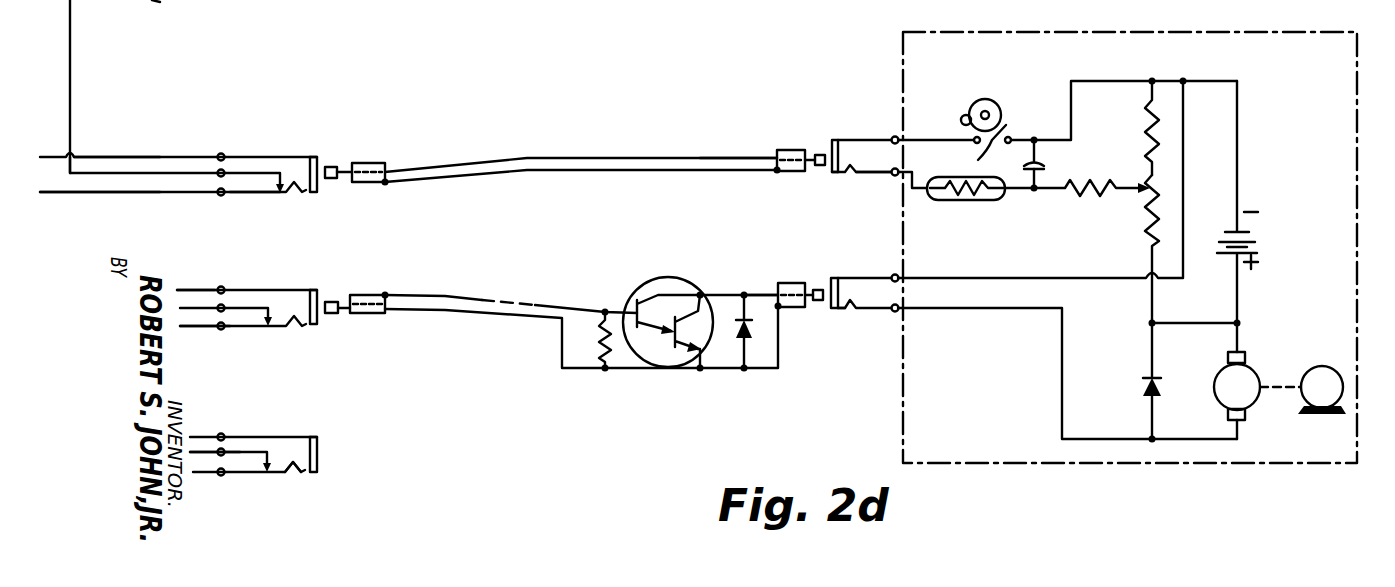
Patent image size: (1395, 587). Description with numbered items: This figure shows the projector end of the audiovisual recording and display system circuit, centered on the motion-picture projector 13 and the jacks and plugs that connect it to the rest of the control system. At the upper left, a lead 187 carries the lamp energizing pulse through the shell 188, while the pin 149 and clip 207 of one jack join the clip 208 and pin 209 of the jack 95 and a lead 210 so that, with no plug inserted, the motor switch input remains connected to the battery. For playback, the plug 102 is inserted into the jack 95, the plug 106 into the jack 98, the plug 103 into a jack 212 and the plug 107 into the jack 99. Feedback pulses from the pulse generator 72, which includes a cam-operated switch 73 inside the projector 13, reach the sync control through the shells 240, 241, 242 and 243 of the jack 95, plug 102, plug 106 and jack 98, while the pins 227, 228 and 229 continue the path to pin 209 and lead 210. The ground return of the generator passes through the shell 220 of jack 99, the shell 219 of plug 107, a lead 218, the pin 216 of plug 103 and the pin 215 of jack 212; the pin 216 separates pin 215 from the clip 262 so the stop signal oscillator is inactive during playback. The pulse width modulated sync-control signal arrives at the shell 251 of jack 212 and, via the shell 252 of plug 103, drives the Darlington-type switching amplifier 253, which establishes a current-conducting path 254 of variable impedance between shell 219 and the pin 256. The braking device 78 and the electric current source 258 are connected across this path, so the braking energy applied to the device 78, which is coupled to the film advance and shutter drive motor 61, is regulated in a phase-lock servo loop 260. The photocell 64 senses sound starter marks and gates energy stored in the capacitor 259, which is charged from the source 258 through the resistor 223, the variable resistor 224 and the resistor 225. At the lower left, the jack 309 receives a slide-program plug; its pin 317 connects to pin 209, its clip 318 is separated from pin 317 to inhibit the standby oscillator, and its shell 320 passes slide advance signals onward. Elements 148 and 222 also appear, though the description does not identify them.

The motion-picture projector 13 is at (1203, 32).
The electric motor 61 is at (1318, 366).
The photocell 64 is at (963, 202).
The pulse generator 72 is at (987, 93).
The cam-operated switch 73 is at (954, 151).
The braking device 78 is at (1220, 374).
The jack 95 is at (282, 150).
The jack 98 is at (878, 129).
The jack 99 is at (873, 267).
The plug 102 is at (390, 156).
The plug 103 is at (388, 291).
The plug 106 is at (810, 144).
The plug 107 is at (810, 274).
The conductor 148 is at (385, 6).
The pin 149 is at (175, 13).
The lead 187 is at (98, 0).
The shell 188 is at (316, 0).
The clip 207 is at (273, 0).
The clip 208 is at (260, 172).
The pin 209 is at (259, 194).
The lead 210 is at (181, 193).
The jack 212 is at (293, 287).
The pin 215 is at (240, 327).
The pin 216 is at (332, 314).
The lead 218 is at (468, 319).
The shell 219 is at (778, 284).
The shell 220 is at (849, 310).
The conductor 222 is at (1064, 280).
The resistor 223 is at (1150, 112).
The variable resistor 224 is at (1138, 233).
The resistor 225 is at (1103, 197).
The pin 227 is at (894, 174).
The pin 228 is at (818, 166).
The pin 229 is at (332, 179).
The shell 240 is at (318, 158).
The shell 241 is at (385, 166).
The shell 242 is at (777, 152).
The shell 243 is at (835, 173).
The shell 251 is at (343, 274).
The shell 252 is at (377, 314).
The Darlington-type switching amplifier 253 is at (648, 283).
The current-conducting path 254 is at (692, 326).
The pin 256 is at (893, 337).
The electric current source 258 is at (1257, 235).
The capacitor 259 is at (1047, 165).
The phase-lock servo loop 260 is at (1003, 261).
The clip 262 is at (243, 306).
The jack 309 is at (282, 517).
The pin 317 is at (283, 474).
The clip 318 is at (250, 451).
The shell 320 is at (317, 437).